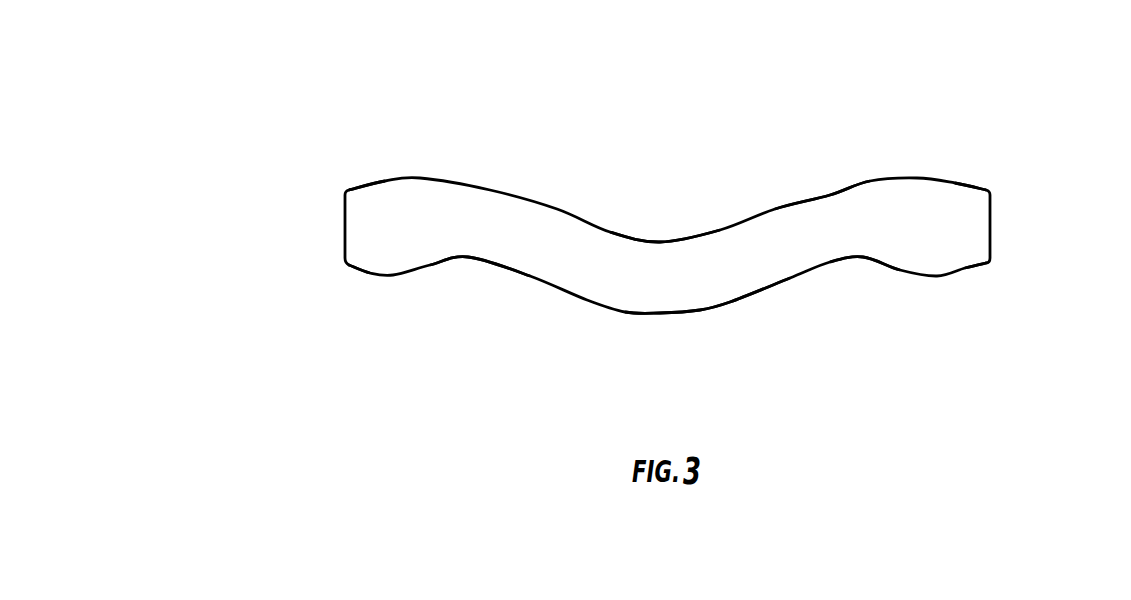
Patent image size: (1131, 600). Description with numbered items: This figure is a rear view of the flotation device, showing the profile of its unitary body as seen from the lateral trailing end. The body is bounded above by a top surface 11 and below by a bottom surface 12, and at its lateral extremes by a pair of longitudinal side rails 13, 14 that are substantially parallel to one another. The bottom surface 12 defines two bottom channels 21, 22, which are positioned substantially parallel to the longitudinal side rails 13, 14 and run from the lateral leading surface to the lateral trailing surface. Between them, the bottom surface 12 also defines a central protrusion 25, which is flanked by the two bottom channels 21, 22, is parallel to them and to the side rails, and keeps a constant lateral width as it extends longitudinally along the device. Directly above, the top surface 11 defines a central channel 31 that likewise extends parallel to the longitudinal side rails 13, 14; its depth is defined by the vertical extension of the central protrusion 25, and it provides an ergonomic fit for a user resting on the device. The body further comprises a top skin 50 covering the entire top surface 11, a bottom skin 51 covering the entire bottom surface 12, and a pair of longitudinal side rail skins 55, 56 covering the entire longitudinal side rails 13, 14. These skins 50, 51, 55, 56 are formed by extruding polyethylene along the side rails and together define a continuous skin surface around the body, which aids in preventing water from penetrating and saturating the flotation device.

The top surface 11 is at (557, 198).
The bottom surface 12 is at (582, 306).
The longitudinal side rail 13 is at (1000, 249).
The longitudinal side rail 14 is at (336, 256).
The bottom channel 21 is at (452, 257).
The bottom channel 22 is at (847, 264).
The central protrusion 25 is at (662, 315).
The central channel 31 is at (665, 241).
The top skin 50 is at (830, 194).
The bottom skin 51 is at (731, 304).
The longitudinal side rail skin 55 is at (345, 223).
The longitudinal side rail skin 56 is at (991, 212).